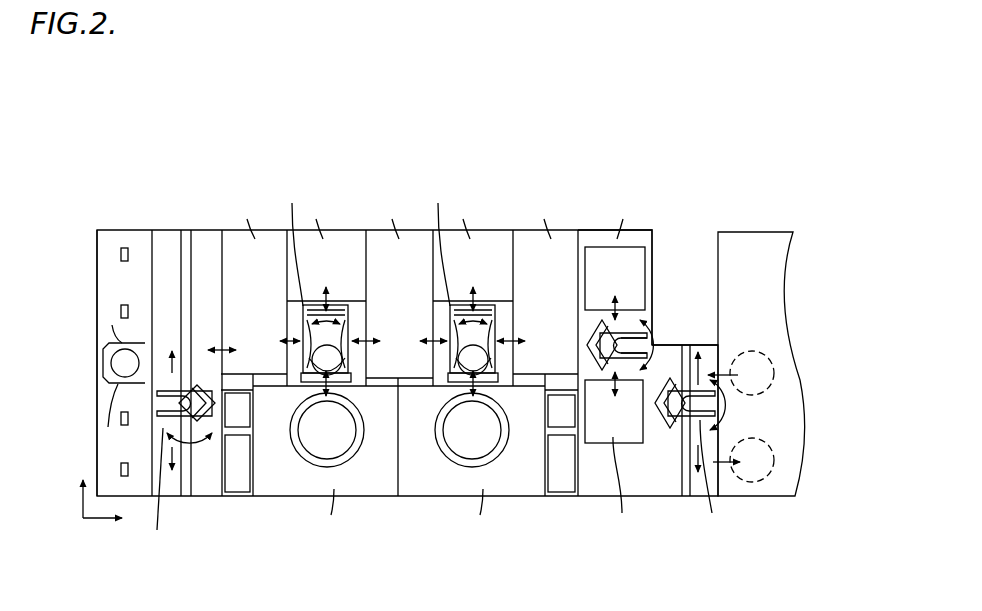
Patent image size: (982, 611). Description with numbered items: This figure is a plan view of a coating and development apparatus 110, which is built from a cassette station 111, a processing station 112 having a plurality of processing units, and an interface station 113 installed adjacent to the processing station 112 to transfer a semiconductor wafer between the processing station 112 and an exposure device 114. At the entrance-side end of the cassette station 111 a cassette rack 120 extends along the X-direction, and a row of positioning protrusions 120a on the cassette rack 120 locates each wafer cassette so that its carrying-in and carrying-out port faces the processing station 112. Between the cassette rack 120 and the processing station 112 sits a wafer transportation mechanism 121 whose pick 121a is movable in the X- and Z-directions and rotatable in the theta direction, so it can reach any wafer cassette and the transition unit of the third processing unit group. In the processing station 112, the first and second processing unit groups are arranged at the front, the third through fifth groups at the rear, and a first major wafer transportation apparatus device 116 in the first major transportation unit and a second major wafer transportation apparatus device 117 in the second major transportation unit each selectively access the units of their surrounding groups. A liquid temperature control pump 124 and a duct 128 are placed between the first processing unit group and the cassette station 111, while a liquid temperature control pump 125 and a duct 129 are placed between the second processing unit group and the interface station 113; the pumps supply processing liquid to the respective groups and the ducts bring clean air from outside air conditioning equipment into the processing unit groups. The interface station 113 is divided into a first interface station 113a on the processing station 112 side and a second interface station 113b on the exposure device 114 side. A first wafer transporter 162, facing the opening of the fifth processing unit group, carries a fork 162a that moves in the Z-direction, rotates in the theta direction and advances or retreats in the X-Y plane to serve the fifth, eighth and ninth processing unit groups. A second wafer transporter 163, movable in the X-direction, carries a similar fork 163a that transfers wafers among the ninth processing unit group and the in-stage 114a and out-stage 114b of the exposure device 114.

The coating and development apparatus 110 is at (594, 117).
The cassette station 111 is at (161, 216).
The processing station 112 is at (407, 192).
The interface station 113 is at (656, 192).
The first interface station 113a is at (656, 246).
The second interface station 113b is at (688, 522).
The exposure device 114 is at (753, 231).
The in-stage 114a is at (755, 483).
The out-stage 114b is at (764, 356).
The first major wafer transportation apparatus device 116 is at (356, 312).
The second major wafer transportation apparatus device 117 is at (504, 312).
The cassette rack 120 is at (117, 339).
The positioning protrusions 120a is at (123, 249).
The wafer transportation mechanism 121 is at (197, 371).
The pick 121a is at (153, 489).
The liquid temperature control pump 124 is at (250, 466).
The liquid temperature control pump 125 is at (553, 466).
The duct 128 is at (250, 407).
The duct 129 is at (553, 407).
The first wafer transporter 162 is at (595, 317).
The fork 162a is at (641, 334).
The second wafer transporter 163 is at (661, 380).
The fork 163a is at (723, 477).